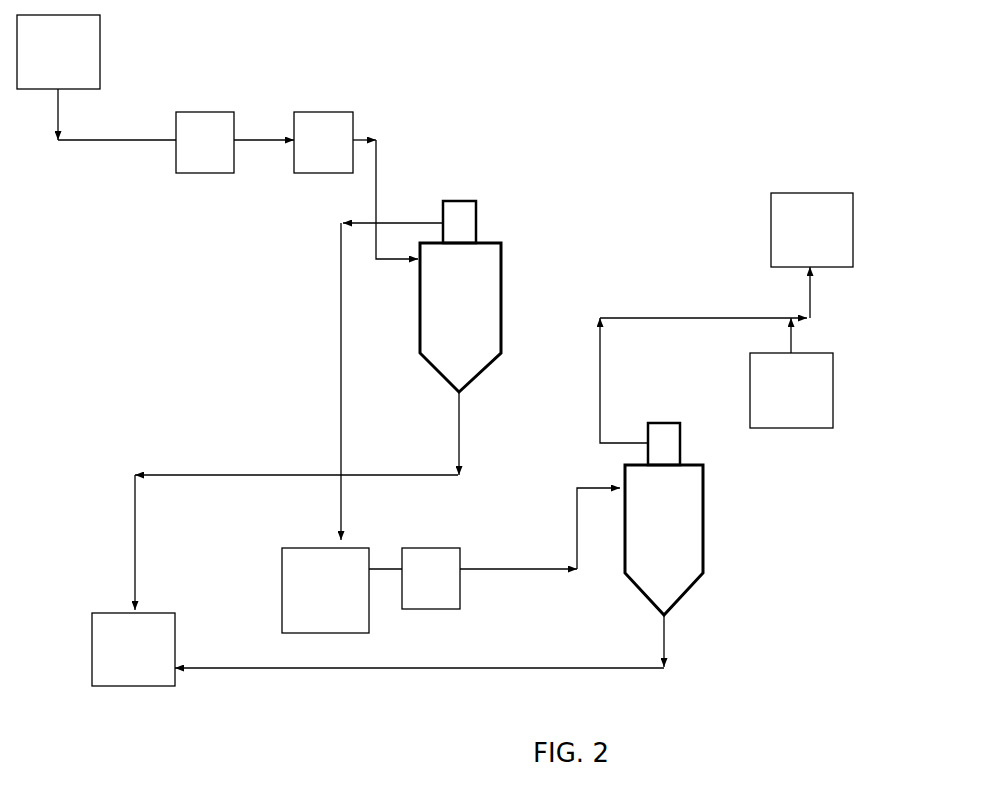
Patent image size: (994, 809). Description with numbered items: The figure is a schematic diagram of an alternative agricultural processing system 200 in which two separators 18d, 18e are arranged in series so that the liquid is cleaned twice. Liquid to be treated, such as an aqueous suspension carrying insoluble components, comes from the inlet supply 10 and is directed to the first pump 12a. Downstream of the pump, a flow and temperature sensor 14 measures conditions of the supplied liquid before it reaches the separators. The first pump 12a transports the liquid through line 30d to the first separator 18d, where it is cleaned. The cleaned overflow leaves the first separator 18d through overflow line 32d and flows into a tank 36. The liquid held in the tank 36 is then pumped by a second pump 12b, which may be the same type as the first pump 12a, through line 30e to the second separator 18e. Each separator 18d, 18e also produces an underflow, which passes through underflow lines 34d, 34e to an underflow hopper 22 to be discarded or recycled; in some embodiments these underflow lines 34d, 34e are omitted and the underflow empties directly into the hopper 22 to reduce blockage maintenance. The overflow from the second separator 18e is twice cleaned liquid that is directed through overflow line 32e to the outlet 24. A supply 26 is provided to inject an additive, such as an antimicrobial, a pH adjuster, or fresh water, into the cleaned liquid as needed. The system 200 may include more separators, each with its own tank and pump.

The alternative system 200 is at (615, 137).
The inlet supply 10 is at (75, 62).
The first pump 12a is at (181, 156).
The second pump 12b is at (406, 591).
The flow and temperature sensor 14 is at (340, 156).
The first separator 18d is at (437, 317).
The second separator 18e is at (642, 539).
The underflow hopper 22 is at (150, 661).
The outlet 24 is at (829, 244).
The supply 26 is at (809, 404).
The line 30d is at (374, 188).
The line 30e is at (575, 510).
The overflow line 32d is at (340, 398).
The overflow line 32e is at (603, 372).
The underflow line 34d is at (458, 413).
The underflow line 34e is at (667, 628).
The tank 36 is at (343, 604).